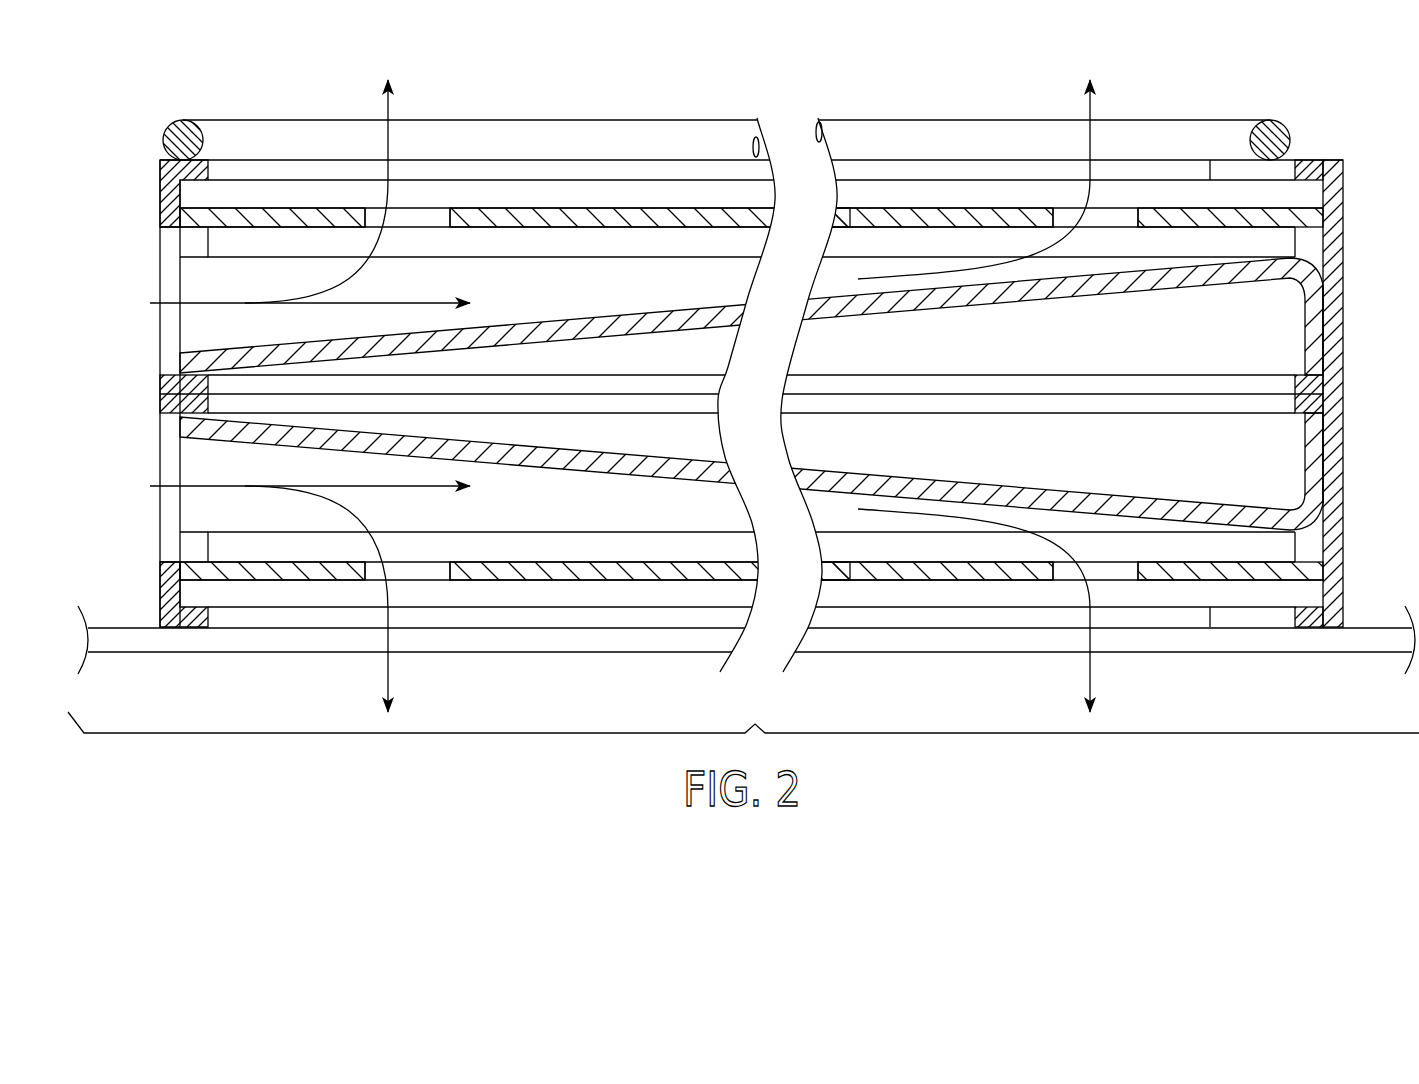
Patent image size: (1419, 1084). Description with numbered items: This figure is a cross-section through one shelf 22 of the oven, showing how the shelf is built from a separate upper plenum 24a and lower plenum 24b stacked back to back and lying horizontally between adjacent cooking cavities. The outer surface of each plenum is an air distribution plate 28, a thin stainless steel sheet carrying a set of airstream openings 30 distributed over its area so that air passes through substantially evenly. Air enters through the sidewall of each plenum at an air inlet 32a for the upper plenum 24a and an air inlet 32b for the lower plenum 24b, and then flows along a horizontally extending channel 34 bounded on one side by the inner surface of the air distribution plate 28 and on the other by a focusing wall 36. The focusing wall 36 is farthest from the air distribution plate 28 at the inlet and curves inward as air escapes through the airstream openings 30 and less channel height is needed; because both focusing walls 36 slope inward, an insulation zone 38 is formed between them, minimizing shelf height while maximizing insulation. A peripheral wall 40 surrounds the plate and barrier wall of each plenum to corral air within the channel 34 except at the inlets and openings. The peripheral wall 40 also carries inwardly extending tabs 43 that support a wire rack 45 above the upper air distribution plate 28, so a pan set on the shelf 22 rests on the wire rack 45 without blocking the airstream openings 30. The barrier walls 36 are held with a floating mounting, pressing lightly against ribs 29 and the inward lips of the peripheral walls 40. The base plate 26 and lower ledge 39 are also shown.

The shelf 22 is at (1370, 391).
The upper plenum 24a is at (1369, 245).
The lower plenum 24b is at (1365, 515).
The base plate 26 is at (138, 642).
The air distribution plate 28 is at (301, 215).
The ribs 29 is at (213, 238).
The airstream openings 30 is at (409, 217).
The air inlet of upper plenum 32a is at (142, 310).
The air inlet of lower plenum 32b is at (142, 510).
The channel 34 is at (497, 300).
The focusing wall 36 is at (237, 351).
The insulation zone 38 is at (1153, 336).
The lower ledge 39 is at (215, 550).
The peripheral wall 40 is at (1343, 237).
The tabs 43 is at (161, 157).
The wire rack 45 is at (186, 130).